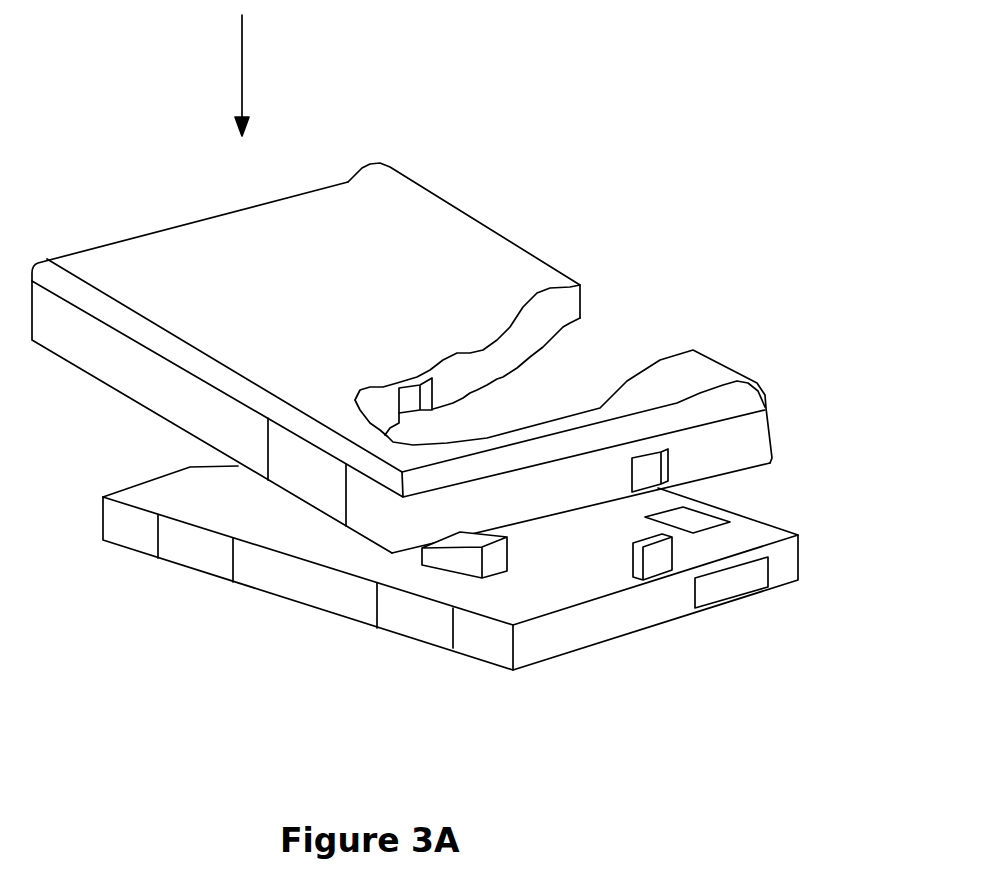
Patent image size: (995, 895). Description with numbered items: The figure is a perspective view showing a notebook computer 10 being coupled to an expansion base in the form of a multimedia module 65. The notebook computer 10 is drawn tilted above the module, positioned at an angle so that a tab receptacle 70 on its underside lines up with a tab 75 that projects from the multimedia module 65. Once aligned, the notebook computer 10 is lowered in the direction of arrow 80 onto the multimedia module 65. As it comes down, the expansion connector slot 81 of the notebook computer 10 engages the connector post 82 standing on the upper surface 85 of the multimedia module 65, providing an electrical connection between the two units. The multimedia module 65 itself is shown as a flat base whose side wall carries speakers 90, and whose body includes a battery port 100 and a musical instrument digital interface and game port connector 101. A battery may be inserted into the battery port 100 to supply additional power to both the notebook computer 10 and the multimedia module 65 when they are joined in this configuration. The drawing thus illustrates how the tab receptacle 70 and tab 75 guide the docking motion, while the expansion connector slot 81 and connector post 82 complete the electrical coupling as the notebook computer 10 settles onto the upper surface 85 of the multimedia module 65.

The notebook computer 10 is at (473, 108).
The multimedia module 65 is at (500, 572).
The tab receptacle 70 is at (647, 467).
The tab 75 is at (655, 567).
The arrow 80 is at (242, 63).
The expansion connector slot 81 is at (410, 393).
The connector post 82 is at (493, 555).
The upper surface 85 is at (788, 523).
The speakers 90 is at (195, 550).
The battery port 100 is at (732, 587).
The MIDI/game port connector 101 is at (698, 522).